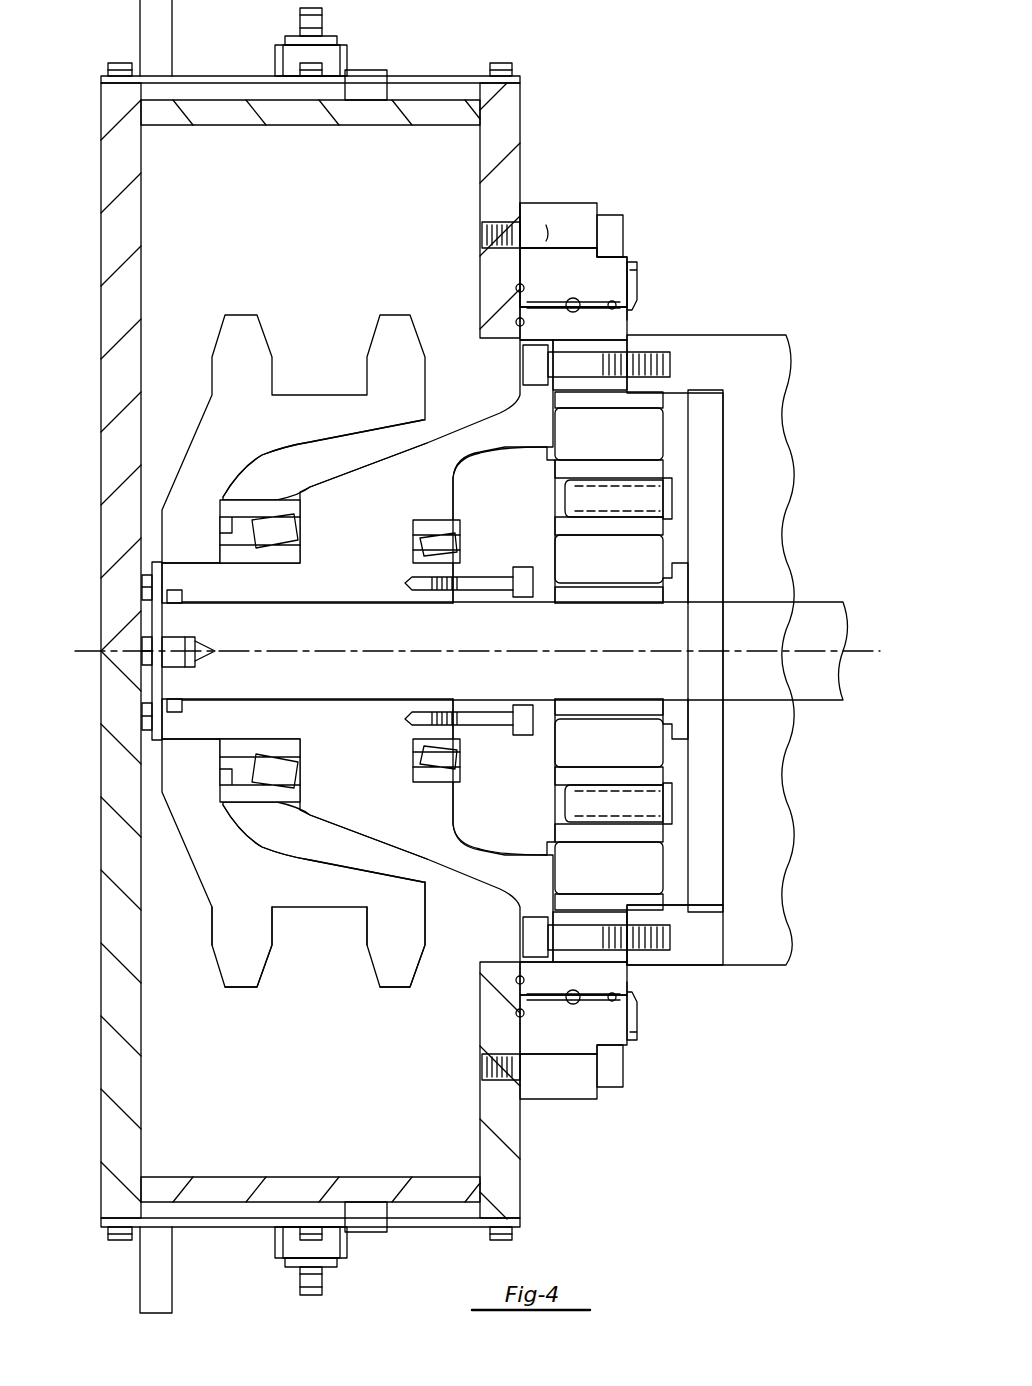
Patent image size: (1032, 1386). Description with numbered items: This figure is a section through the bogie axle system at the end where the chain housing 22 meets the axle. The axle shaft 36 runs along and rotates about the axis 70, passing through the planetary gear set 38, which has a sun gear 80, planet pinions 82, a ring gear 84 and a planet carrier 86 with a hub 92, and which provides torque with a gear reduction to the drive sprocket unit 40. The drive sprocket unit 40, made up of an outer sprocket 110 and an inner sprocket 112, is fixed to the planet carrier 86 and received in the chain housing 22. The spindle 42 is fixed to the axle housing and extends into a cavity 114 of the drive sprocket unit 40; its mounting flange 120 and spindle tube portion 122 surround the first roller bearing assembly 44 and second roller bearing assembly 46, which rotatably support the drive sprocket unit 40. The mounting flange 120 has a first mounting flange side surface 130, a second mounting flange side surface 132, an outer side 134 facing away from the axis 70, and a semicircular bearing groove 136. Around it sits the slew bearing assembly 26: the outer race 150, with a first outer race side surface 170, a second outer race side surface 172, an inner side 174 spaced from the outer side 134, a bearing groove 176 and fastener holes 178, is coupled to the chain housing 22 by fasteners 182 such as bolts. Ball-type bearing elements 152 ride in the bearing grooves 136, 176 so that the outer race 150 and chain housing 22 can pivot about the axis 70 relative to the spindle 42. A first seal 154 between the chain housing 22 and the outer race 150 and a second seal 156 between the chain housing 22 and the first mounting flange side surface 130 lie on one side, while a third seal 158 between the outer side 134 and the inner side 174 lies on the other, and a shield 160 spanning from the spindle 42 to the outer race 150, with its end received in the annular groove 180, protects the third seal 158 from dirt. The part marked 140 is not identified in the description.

The chain housing 22 is at (101, 278).
The slew bearing assembly 26 is at (636, 194).
The axle shaft 36 is at (797, 630).
The planetary gear set 38 is at (670, 893).
The drive sprocket unit 40 is at (193, 860).
The spindle 42 is at (317, 489).
The first roller bearing assembly 44 is at (277, 782).
The second roller bearing assembly 46 is at (437, 780).
The axis 70 is at (872, 650).
The sun gear 80 is at (640, 580).
The planet pinions 82 is at (598, 446).
The ring gear 84 is at (665, 397).
The planet carrier 86 is at (503, 840).
The hub 92 is at (672, 488).
The outer sprocket 110 is at (232, 968).
The inner sprocket 112 is at (393, 970).
The cavity 114 is at (323, 468).
The mounting flange 120 is at (628, 967).
The spindle tube portion 122 is at (334, 828).
The first mounting flange side surface 130 is at (522, 338).
The second mounting flange side surface 132 is at (630, 348).
The outer side 134 is at (636, 290).
The bearing groove 136 is at (577, 312).
The fastener 140 is at (525, 365).
The outer race 150 is at (537, 203).
The bearing elements 152 is at (522, 258).
The first seal 154 is at (516, 1013).
The second seal 156 is at (516, 982).
The third seal 158 is at (608, 1005).
The shield 160 is at (638, 993).
The first outer race side surface 170 is at (522, 210).
The second outer race side surface 172 is at (631, 275).
The inner side 174 is at (515, 320).
The bearing groove 176 is at (580, 298).
The fastener holes 178 is at (550, 232).
The annular groove 180 is at (632, 1032).
The fastener 182 is at (610, 218).